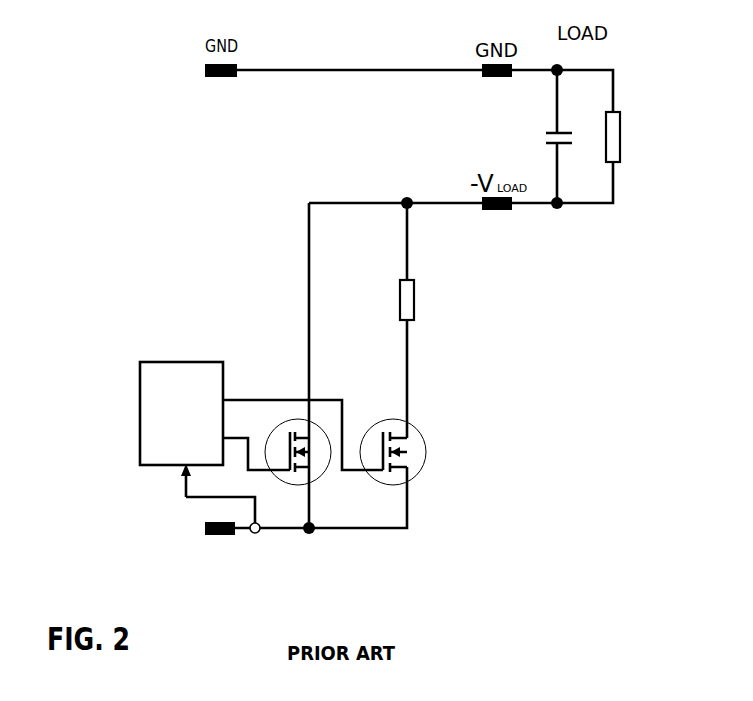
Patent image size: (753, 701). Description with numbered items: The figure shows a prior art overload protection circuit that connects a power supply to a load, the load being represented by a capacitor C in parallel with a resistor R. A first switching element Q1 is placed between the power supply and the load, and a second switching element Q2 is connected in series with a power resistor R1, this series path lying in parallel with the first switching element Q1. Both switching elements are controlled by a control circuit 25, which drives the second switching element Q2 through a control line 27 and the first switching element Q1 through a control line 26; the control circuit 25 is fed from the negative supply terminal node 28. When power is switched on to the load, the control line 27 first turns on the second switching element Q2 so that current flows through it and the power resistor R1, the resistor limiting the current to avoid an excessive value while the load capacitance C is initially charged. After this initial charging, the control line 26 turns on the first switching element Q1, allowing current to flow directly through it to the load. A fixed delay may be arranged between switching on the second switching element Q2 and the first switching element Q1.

The control circuit 25 is at (138, 413).
The control line 26 is at (228, 437).
The control line 27 is at (230, 398).
The negative supply terminal node (-Vsupply) 28 is at (260, 533).
The first switching element Q1 is at (318, 477).
The second switching element Q2 is at (420, 472).
The load resistor R is at (620, 140).
The power resistor R1 is at (417, 308).
The load capacitor C is at (540, 140).